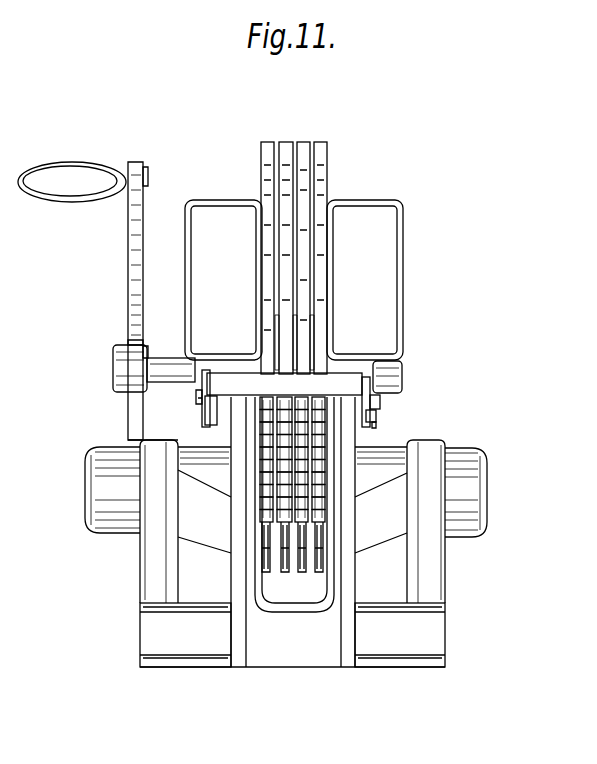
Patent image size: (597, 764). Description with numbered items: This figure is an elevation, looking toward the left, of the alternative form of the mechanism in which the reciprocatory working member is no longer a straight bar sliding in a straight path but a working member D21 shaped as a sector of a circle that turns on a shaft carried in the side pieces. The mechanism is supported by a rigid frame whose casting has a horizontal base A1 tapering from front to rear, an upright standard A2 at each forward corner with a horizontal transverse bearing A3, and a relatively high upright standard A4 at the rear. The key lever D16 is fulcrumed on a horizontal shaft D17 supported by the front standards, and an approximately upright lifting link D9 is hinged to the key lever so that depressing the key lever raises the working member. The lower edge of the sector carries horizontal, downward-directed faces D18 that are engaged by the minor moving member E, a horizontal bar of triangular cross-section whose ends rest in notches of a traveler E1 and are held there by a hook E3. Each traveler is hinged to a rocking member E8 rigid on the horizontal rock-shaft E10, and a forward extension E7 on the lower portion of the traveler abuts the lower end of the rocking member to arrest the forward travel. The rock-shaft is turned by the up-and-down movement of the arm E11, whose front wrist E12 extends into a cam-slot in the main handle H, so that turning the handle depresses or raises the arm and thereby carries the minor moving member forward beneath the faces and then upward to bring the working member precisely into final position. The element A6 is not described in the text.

The working member D21 is at (321, 141).
The side blocks A6 is at (222, 212).
The main handle H is at (132, 243).
The wrist E12 is at (127, 337).
The arm E11 is at (149, 345).
The rock-shaft E10 is at (113, 362).
The hook E3 is at (196, 380).
The minor moving member E is at (284, 384).
The traveler E1 is at (203, 409).
The rocking member E8 is at (380, 397).
The forward extension E7 is at (376, 420).
The upright standard A4 is at (322, 648).
The horizontal base A1 is at (430, 623).
The upright standard A2 is at (155, 545).
The transverse bearing A3 is at (143, 444).
The horizontal shaft D17 is at (87, 493).
The key lever D16 is at (215, 537).
The faces D18 is at (316, 408).
The lifting link D9 is at (325, 553).